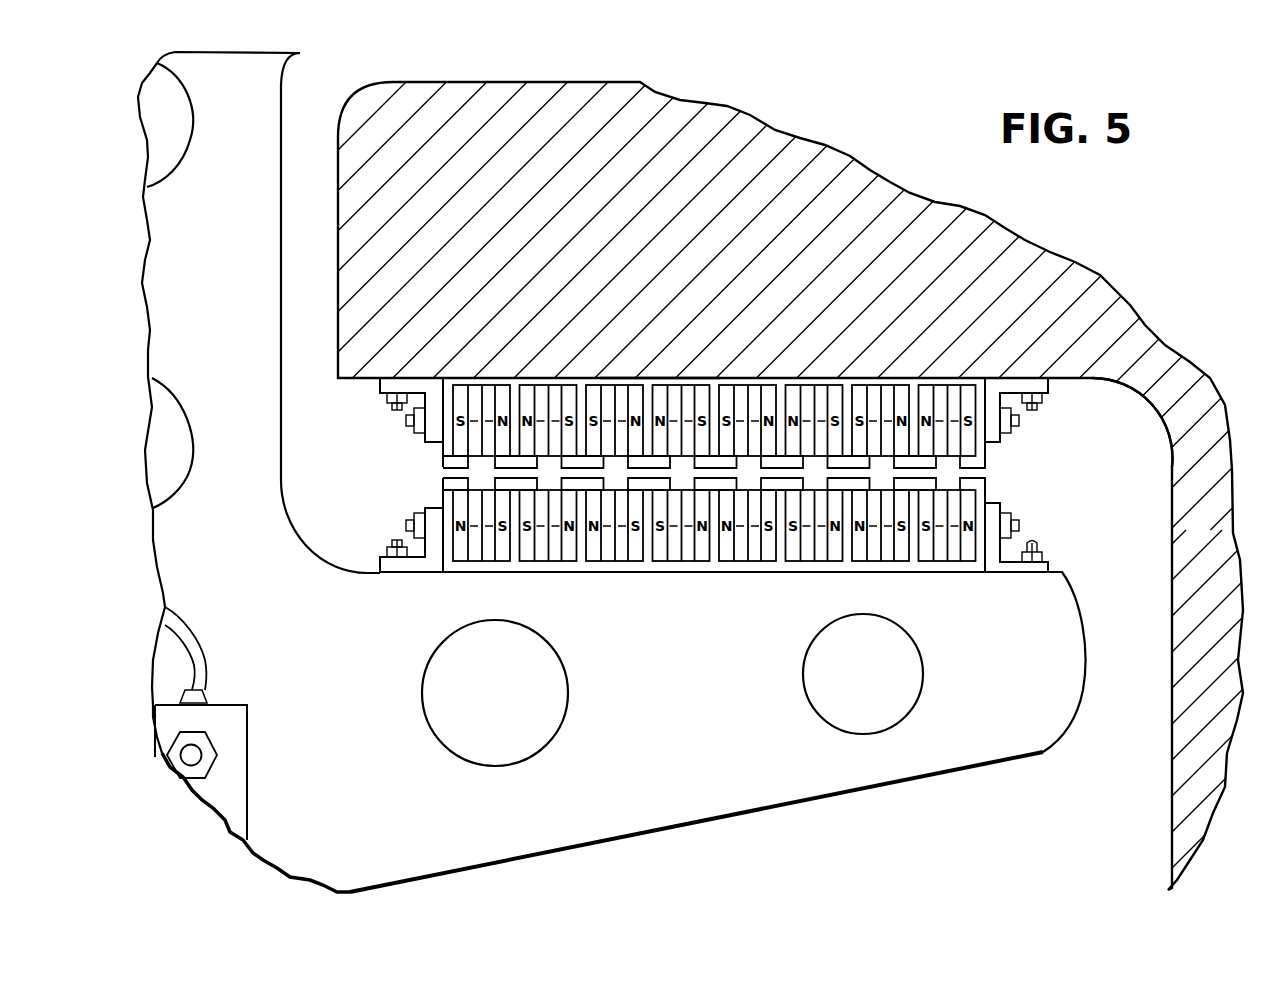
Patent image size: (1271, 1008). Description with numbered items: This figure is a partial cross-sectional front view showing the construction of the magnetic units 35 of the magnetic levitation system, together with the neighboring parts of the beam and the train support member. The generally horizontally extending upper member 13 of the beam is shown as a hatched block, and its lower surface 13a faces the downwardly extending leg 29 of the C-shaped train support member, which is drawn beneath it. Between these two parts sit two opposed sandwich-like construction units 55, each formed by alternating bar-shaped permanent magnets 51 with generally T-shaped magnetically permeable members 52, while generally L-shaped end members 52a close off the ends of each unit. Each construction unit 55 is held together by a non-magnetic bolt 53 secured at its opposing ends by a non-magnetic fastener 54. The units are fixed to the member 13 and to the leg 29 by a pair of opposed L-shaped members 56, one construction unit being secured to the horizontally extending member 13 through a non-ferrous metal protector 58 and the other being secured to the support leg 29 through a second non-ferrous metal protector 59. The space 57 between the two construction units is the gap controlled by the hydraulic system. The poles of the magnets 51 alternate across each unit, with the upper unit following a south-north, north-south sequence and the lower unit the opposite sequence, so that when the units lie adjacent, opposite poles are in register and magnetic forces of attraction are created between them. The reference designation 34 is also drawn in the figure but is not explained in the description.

The horizontally extending upper member 13 is at (753, 188).
The lower surface 13a is at (1062, 379).
The downwardly extending leg 29 is at (712, 708).
The upper magnet assembly 34 is at (383, 420).
The magnetic unit 35 is at (384, 508).
The bar-shaped permanent magnet 51 is at (445, 453).
The T-shaped magnetically permeable member 52 is at (507, 427).
The L-shaped end member 52a is at (392, 402).
The non-magnetic bolt 53 is at (406, 421).
The non-magnetic fastener 54 is at (425, 436).
The sandwich-like construction unit 55 is at (480, 378).
The L-shaped member 56 is at (380, 384).
The space between construction units 57 is at (483, 478).
The non-ferrous metal protector 58 is at (660, 378).
The non-ferrous metal protector 59 is at (620, 573).